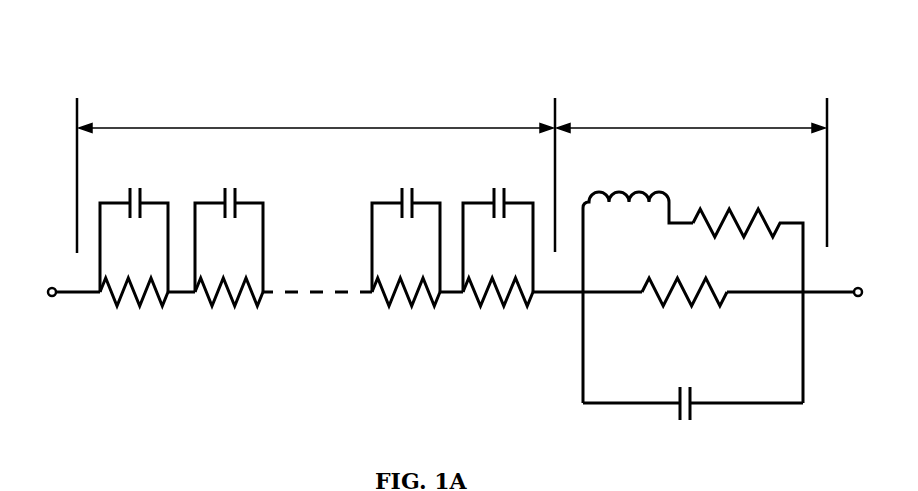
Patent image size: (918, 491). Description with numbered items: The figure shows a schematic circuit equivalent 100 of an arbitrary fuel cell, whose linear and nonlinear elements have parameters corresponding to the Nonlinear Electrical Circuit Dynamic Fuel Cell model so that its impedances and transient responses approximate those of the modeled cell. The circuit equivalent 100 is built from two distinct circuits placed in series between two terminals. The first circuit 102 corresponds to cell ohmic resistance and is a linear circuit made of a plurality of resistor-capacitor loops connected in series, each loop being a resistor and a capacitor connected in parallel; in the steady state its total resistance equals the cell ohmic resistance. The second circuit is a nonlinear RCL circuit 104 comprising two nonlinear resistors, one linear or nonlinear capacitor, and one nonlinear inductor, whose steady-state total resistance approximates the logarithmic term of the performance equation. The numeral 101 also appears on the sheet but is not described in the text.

The circuit equivalent 100 is at (755, 27).
The battery cell 101 is at (655, 488).
The first circuit 102 is at (222, 353).
The RCL circuit 104 is at (545, 345).